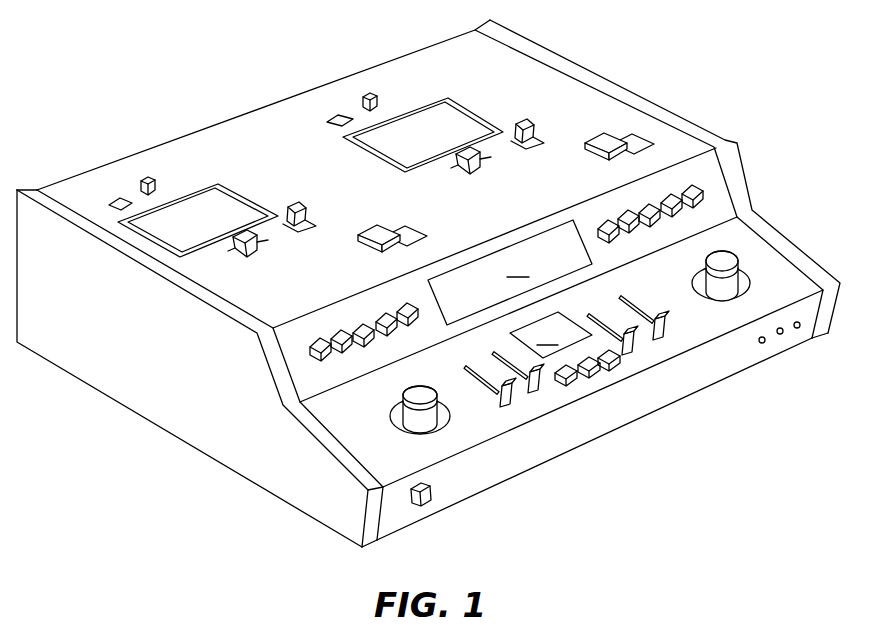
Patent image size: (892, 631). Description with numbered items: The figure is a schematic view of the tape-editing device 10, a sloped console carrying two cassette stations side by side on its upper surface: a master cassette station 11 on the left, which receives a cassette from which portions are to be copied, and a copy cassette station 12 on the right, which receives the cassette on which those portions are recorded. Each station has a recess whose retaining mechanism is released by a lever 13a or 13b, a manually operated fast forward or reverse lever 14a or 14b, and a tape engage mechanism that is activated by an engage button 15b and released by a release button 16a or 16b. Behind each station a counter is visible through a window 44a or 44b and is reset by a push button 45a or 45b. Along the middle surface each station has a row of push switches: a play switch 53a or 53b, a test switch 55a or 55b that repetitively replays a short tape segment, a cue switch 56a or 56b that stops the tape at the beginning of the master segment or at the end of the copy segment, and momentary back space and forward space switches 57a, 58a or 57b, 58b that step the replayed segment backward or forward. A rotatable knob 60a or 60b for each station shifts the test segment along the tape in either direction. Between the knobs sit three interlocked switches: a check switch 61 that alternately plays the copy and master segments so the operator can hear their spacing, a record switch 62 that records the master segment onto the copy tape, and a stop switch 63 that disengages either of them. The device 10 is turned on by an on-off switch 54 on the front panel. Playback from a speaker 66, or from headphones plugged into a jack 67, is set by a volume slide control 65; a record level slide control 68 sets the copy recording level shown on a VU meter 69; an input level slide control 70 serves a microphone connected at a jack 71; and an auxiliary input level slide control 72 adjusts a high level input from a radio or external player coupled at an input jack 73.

The device 10 is at (592, 48).
The master cassette station 11 is at (232, 190).
The copy cassette station 12 is at (458, 108).
The lever 13a is at (296, 205).
The lever 13b is at (521, 122).
The lever 14a is at (255, 248).
The lever 14b is at (478, 172).
The engage button 15b is at (369, 229).
The release button 16a is at (405, 225).
The release button 16b is at (633, 136).
The window 44a is at (116, 200).
The window 44b is at (336, 116).
The push button 45a is at (148, 178).
The push button 45b is at (367, 92).
The play switch 53a is at (318, 338).
The test switch 55a is at (348, 357).
The cue switch 56a is at (366, 322).
The back space switch 57a is at (392, 340).
The forward space switch 58a is at (409, 303).
The play switch 53b is at (605, 222).
The test switch 55b is at (627, 210).
The cue switch 56b is at (658, 230).
The back space switch 57b is at (672, 195).
The forward space switch 58b is at (700, 190).
The on-off switch 54 is at (423, 506).
The rotatable knob 60a is at (437, 402).
The rotatable knob 60b is at (735, 263).
The check switch 61 is at (568, 387).
The record switch 62 is at (590, 378).
The stop switch 63 is at (612, 368).
The volume slide control 65 is at (507, 407).
The speaker 66 is at (510, 272).
The jack 67 is at (762, 344).
The record level slide control 68 is at (540, 387).
The VU meter 69 is at (551, 335).
The input level slide control 70 is at (637, 345).
The jack 71 is at (780, 334).
The auxiliary input level slide control 72 is at (672, 323).
The input jack 73 is at (799, 328).